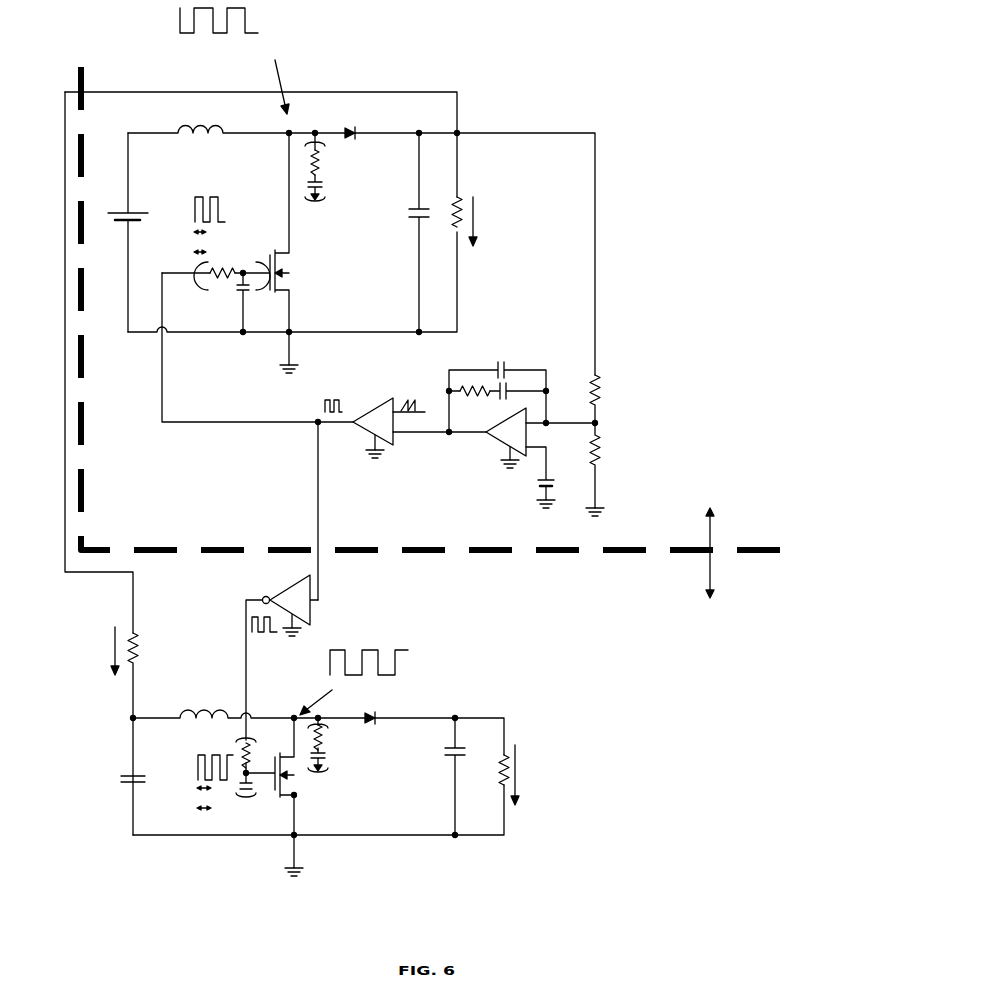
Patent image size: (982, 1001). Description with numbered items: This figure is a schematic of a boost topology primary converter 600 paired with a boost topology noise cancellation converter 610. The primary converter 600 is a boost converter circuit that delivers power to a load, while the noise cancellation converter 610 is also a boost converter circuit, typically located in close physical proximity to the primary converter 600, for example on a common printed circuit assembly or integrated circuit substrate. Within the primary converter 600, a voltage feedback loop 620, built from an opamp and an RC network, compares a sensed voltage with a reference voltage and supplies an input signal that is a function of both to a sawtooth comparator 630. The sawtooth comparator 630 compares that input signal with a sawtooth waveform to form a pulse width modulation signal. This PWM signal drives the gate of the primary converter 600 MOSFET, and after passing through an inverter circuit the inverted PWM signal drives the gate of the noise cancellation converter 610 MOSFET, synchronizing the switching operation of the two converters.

The primary converter 600 is at (445, 303).
The noise cancellation converter 610 is at (452, 725).
The voltage feedback loop 620 is at (518, 427).
The sawtooth comparator 630 is at (401, 457).